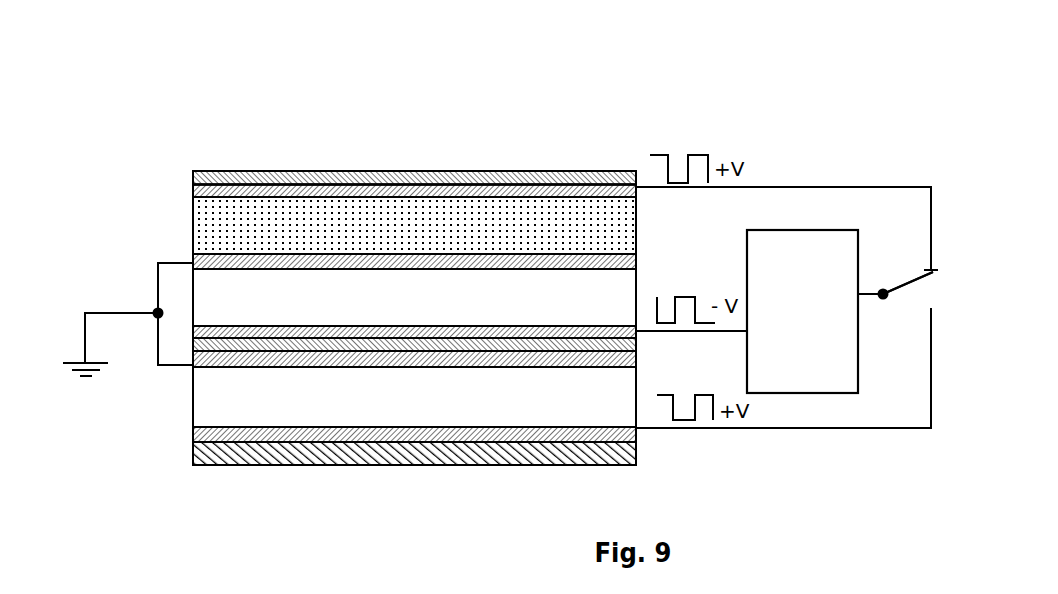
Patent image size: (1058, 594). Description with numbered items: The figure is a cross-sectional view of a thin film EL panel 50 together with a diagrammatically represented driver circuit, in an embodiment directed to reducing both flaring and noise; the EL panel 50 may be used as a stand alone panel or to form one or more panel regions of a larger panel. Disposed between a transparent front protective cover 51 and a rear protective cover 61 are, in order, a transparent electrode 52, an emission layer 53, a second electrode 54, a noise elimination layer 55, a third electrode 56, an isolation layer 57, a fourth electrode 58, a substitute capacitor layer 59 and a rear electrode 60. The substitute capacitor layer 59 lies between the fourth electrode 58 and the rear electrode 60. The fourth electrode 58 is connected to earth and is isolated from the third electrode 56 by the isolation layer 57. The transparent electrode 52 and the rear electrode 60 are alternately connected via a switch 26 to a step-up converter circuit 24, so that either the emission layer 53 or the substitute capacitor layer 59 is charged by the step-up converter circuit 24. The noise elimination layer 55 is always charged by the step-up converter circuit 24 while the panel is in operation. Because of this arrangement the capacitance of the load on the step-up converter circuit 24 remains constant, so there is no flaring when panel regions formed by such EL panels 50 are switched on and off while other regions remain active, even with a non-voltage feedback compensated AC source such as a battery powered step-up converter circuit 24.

The thin film EL panel 50 is at (502, 128).
The transparent front protective cover 51 is at (355, 175).
The transparent electrode 52 is at (270, 192).
The emission layer 53 is at (210, 233).
The second electrode 54 is at (190, 258).
The noise elimination layer 55 is at (623, 305).
The third electrode 56 is at (636, 325).
The isolation layer 57 is at (637, 342).
The fourth electrode 58 is at (628, 358).
The substitute capacitor layer 59 is at (208, 403).
The rear electrode 60 is at (192, 438).
The rear protective cover 61 is at (240, 455).
The step-up converter circuit 24 is at (840, 385).
The switch 26 is at (909, 315).